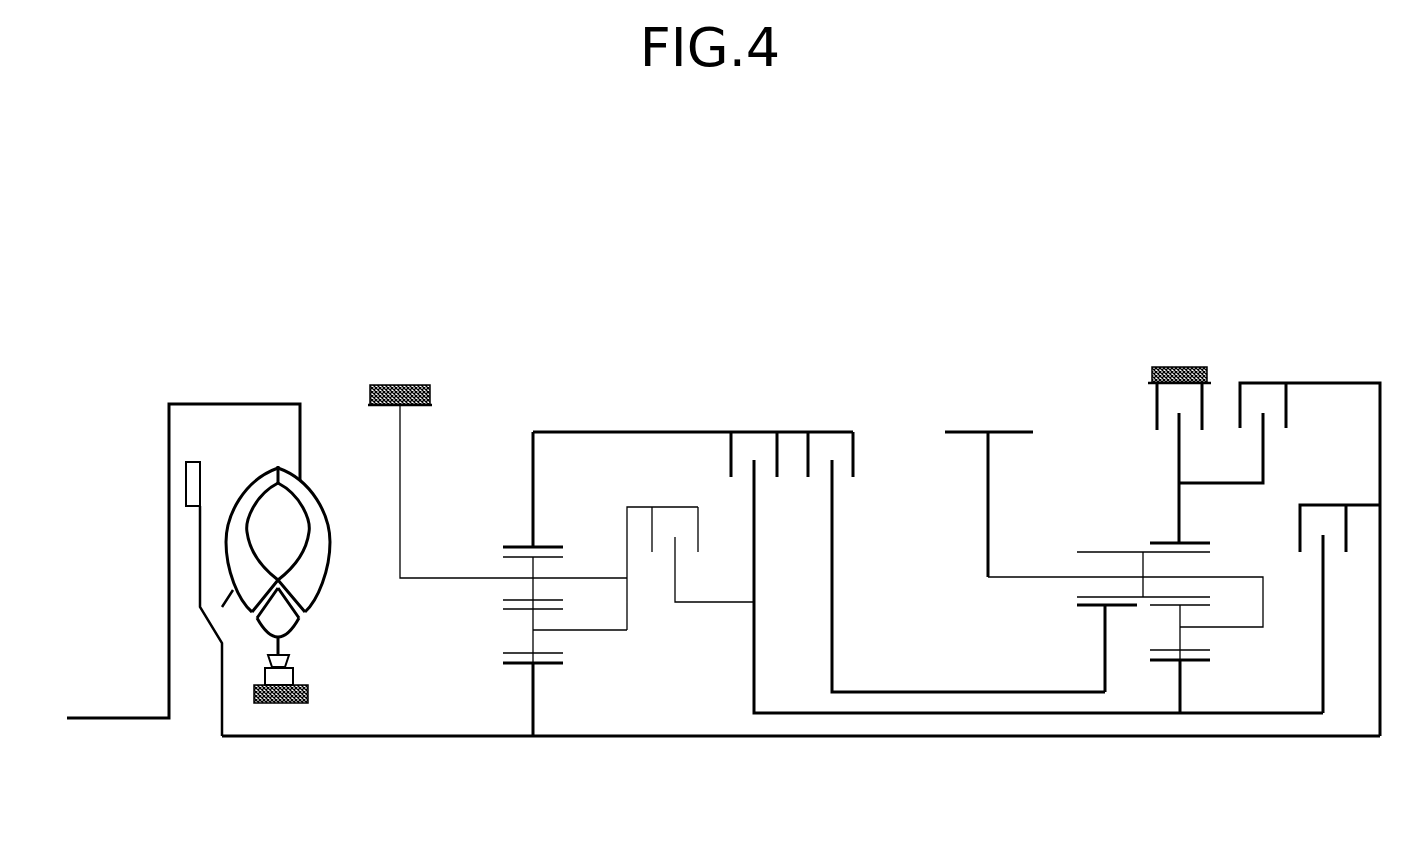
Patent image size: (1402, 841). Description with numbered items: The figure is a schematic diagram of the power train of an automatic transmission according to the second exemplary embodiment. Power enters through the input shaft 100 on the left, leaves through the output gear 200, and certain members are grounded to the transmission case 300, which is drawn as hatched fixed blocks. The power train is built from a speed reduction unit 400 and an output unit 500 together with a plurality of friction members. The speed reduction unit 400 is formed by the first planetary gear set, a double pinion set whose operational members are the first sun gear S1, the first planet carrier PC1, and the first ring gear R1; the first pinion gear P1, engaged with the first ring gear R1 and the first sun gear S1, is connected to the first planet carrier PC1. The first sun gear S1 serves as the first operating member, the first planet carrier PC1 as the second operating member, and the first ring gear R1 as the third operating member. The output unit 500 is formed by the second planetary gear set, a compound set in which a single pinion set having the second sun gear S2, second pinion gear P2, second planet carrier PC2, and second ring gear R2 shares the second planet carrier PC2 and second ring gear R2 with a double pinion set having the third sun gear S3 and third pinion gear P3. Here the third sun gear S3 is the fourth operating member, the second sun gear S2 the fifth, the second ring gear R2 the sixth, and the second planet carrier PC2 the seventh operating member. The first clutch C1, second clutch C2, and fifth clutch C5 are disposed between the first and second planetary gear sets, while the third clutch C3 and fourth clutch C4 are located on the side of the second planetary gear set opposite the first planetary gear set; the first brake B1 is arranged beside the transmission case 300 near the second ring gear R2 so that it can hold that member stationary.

The input shaft 100 is at (353, 736).
The output gear 200 is at (988, 515).
The transmission case 300 is at (413, 384).
The speed reduction unit 400 is at (626, 608).
The output unit 500 is at (1125, 605).
The first ring gear R1 is at (528, 535).
The first planet carrier PC1 is at (513, 491).
The first pinion gear P1 is at (561, 610).
The first sun gear S1 is at (528, 699).
The fifth clutch C5 is at (690, 552).
The second clutch C2 is at (1027, 557).
The first clutch C1 is at (956, 546).
The second planet carrier PC2 is at (1125, 585).
The second pinion gear P2 is at (1143, 563).
The second ring gear R2 is at (1206, 478).
The second sun gear S2 is at (1102, 648).
The third pinion gear P3 is at (1176, 632).
The third sun gear S3 is at (1184, 686).
The first brake B1 is at (1161, 409).
The fourth clutch C4 is at (1310, 543).
The third clutch C3 is at (1340, 594).